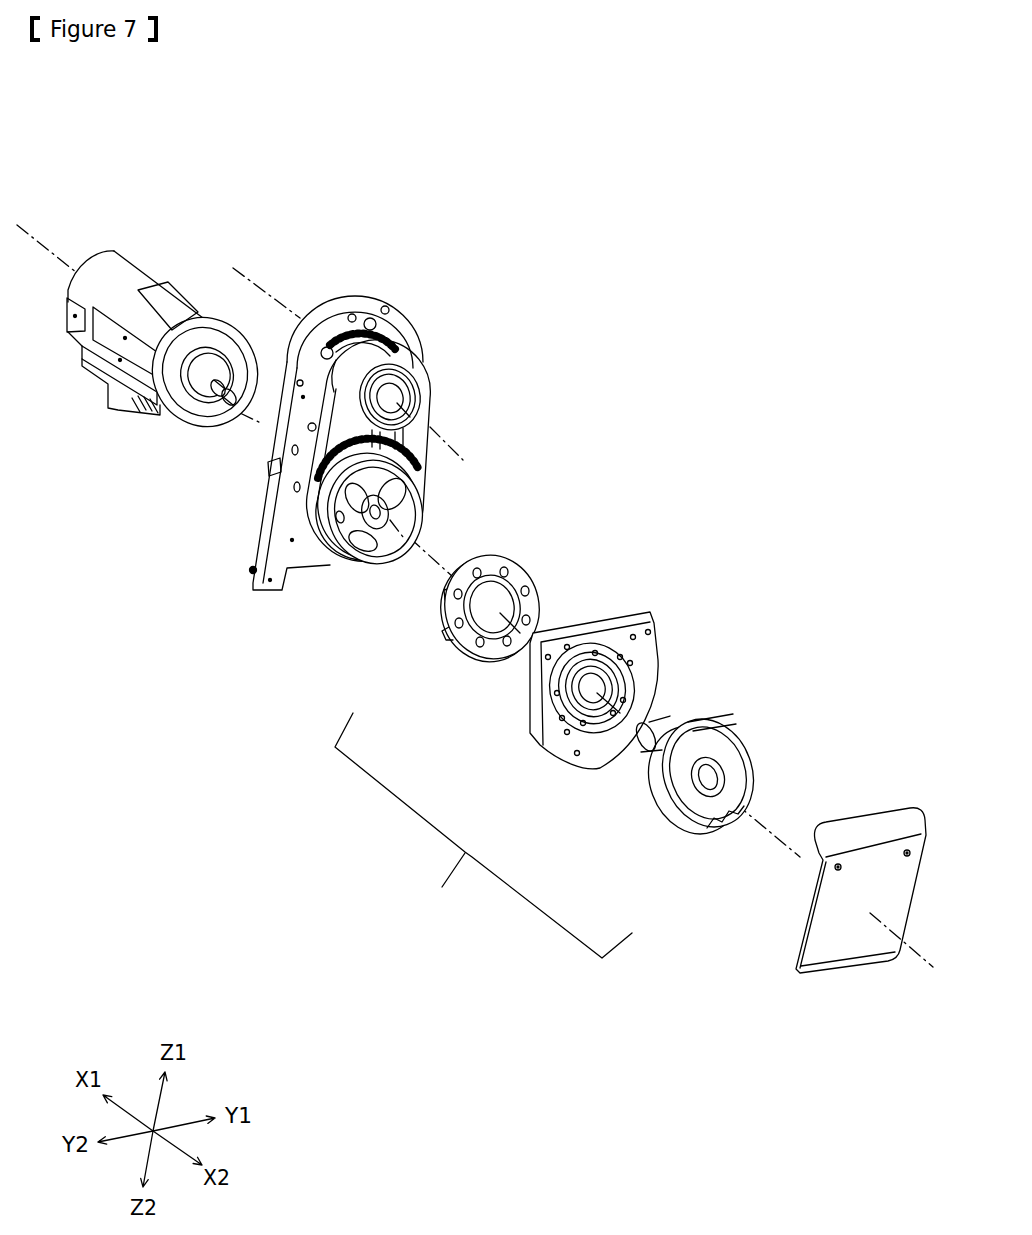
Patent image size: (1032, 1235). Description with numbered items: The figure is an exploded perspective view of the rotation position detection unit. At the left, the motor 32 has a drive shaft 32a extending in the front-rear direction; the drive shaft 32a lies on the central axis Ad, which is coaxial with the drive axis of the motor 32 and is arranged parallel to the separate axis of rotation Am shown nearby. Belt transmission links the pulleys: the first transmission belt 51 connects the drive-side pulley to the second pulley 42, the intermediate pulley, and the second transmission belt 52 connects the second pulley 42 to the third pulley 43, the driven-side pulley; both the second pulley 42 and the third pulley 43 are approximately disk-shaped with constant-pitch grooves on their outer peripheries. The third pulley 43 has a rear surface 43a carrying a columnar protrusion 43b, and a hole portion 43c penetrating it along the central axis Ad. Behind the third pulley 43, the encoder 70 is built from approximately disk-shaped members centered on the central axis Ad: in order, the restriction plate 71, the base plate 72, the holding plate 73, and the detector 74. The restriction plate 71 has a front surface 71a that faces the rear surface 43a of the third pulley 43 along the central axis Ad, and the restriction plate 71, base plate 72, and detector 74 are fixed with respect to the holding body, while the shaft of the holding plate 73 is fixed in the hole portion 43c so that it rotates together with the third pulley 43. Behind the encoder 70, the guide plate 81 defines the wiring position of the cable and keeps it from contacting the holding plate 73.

The motor 32 is at (171, 380).
The drive shaft 32a is at (213, 387).
The second pulley 42 is at (420, 386).
The third pulley 43 is at (371, 542).
The rear surface 43a is at (403, 517).
The protrusion 43b is at (340, 523).
The hole portion 43c is at (372, 513).
The first transmission belt 51 is at (375, 345).
The second transmission belt 52 is at (400, 358).
The encoder 70 is at (551, 733).
The restriction plate 71 is at (470, 621).
The front surface 71a is at (480, 560).
The base plate 72 is at (548, 740).
The holding plate 73 is at (643, 785).
The detector 74 is at (682, 815).
The guide plate 81 is at (858, 863).
The central axis Ad is at (60, 262).
The axis of rotation Am is at (240, 270).